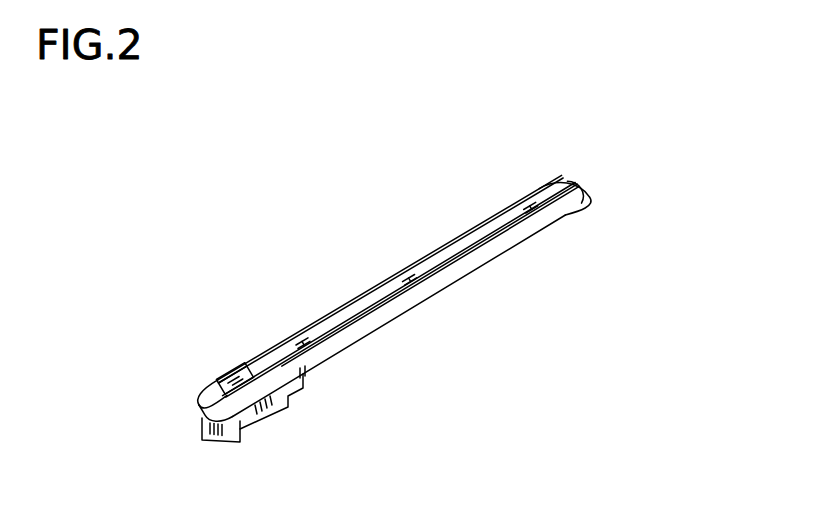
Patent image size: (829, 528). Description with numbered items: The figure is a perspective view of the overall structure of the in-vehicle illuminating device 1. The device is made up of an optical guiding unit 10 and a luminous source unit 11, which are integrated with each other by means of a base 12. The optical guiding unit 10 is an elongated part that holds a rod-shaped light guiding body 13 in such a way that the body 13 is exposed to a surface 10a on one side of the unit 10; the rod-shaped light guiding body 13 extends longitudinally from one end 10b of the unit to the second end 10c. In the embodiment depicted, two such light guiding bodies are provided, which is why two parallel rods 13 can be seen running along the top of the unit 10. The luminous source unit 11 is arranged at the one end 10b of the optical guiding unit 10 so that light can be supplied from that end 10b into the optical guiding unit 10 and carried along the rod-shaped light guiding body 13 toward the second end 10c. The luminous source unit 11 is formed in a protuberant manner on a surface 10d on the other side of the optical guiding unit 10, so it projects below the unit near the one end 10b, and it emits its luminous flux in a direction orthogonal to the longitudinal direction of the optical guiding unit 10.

The in-vehicle illuminating device 1 is at (592, 163).
The optical guiding unit 10 is at (500, 283).
The surface on one side 10a is at (579, 208).
The one end 10b is at (241, 368).
The second end 10c is at (558, 180).
The surface on the other side 10d is at (337, 355).
The luminous source unit 11 is at (275, 426).
The base 12 is at (325, 316).
The rod-shaped light guiding body 13 is at (380, 302).